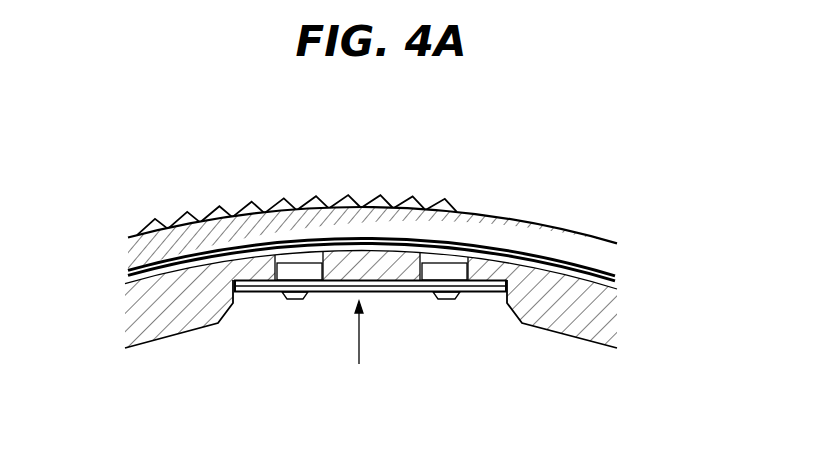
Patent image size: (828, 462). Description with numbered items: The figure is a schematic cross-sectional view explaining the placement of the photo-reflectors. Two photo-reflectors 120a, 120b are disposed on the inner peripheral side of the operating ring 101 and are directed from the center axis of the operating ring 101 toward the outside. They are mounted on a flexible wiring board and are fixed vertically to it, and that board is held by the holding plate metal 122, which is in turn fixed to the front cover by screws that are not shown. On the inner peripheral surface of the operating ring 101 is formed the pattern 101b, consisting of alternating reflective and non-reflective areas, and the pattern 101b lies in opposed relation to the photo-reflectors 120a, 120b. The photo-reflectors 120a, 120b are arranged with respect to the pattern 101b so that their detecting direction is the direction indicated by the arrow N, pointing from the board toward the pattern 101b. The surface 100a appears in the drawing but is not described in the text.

The operating ring 101 is at (158, 243).
The pattern 101b is at (291, 240).
The bottom surface of housing body 100a is at (163, 327).
The photo-reflector 120a is at (442, 271).
The photo-reflector 120b is at (295, 271).
The holding plate metal 122 is at (481, 289).
The arrow N is at (360, 347).